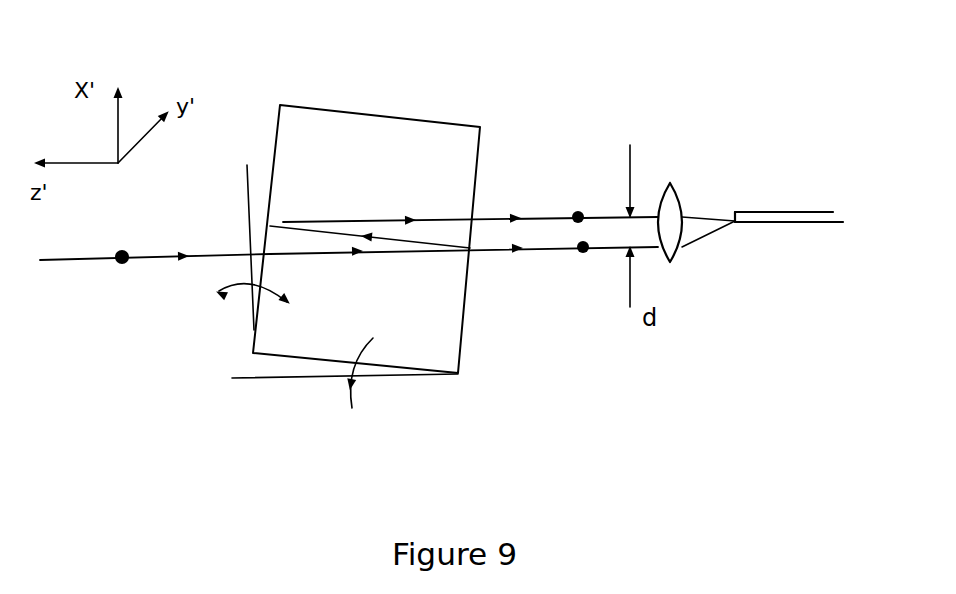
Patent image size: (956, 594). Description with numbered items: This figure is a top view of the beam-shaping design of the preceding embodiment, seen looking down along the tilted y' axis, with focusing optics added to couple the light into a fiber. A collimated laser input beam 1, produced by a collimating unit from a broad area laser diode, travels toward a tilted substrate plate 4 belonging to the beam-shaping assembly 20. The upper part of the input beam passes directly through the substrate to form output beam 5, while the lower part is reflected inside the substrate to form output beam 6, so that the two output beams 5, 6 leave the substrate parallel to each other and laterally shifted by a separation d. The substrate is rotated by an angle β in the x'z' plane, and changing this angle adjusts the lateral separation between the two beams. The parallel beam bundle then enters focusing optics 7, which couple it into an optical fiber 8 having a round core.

The collimated laser input beam 1 is at (155, 277).
The beam-shaping prism plate 4 is at (366, 224).
The output beam 5 is at (464, 266).
The output beam 6 is at (470, 199).
The focusing optics 7 is at (696, 234).
The optical fiber 8 is at (789, 196).
The beam shaping assembly 20 is at (363, 80).